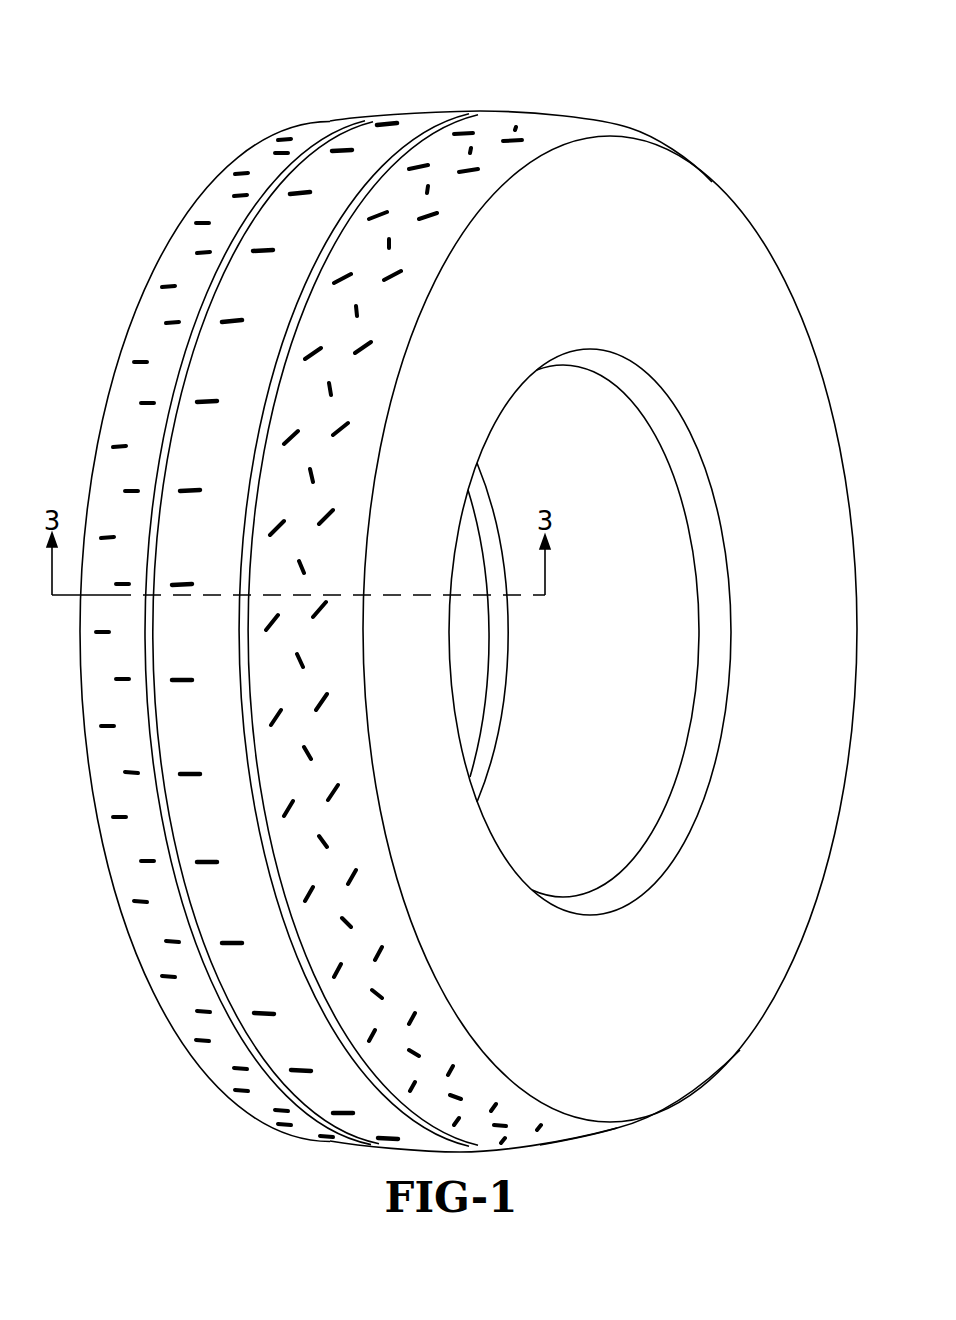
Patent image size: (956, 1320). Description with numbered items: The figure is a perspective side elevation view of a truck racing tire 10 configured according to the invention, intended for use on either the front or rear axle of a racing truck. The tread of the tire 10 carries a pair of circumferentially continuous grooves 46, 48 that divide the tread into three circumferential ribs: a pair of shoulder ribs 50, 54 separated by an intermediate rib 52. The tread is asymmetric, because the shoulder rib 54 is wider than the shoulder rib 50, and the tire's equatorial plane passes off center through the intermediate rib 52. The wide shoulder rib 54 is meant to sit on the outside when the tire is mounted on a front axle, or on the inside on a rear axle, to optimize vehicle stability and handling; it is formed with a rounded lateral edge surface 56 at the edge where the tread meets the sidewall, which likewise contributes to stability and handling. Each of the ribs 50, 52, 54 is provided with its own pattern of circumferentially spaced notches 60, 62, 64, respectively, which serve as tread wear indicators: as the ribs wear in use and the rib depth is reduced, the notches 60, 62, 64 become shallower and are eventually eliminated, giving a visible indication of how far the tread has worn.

The truck racing tire 10 is at (118, 107).
The circumferentially continuous groove 46 is at (283, 180).
The circumferentially continuous groove 48 is at (411, 147).
The shoulder rib 50 is at (182, 632).
The intermediate rib 52 is at (230, 599).
The shoulder rib 54 is at (561, 591).
The rounded lateral edge surface 56 is at (618, 1129).
The circumferentially spaced notches 60 is at (124, 443).
The circumferentially spaced notches 62 is at (210, 400).
The circumferentially spaced notches 64 is at (362, 348).